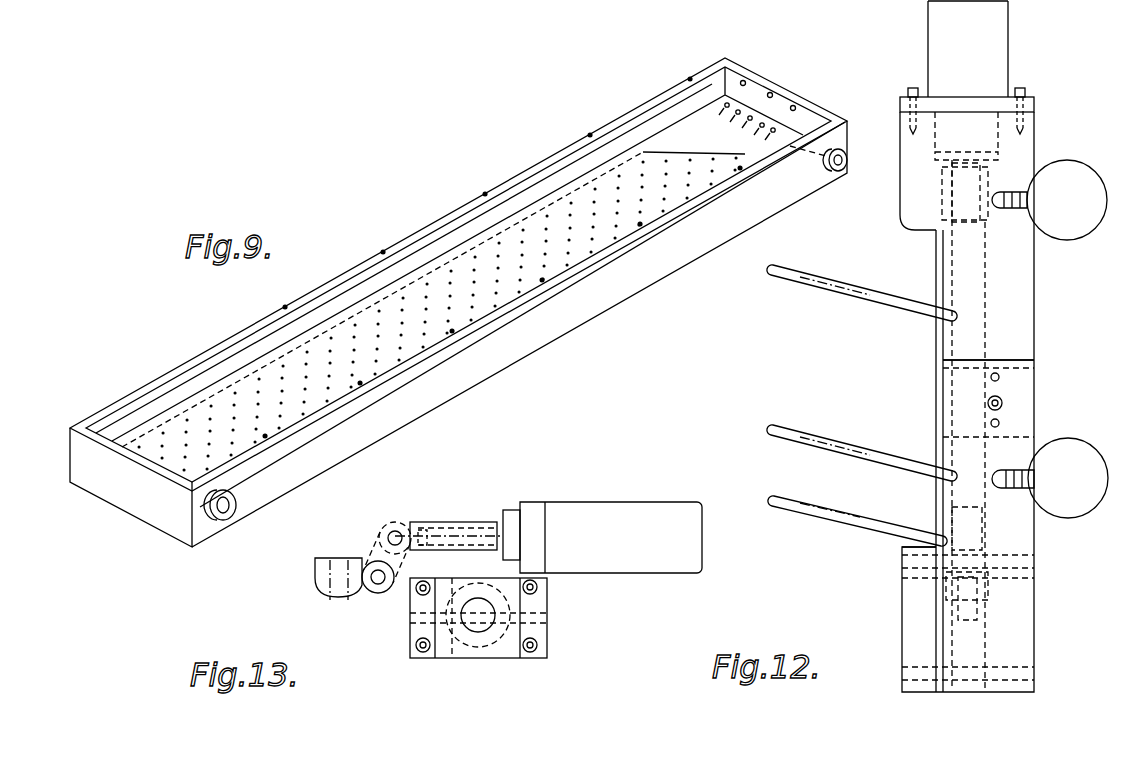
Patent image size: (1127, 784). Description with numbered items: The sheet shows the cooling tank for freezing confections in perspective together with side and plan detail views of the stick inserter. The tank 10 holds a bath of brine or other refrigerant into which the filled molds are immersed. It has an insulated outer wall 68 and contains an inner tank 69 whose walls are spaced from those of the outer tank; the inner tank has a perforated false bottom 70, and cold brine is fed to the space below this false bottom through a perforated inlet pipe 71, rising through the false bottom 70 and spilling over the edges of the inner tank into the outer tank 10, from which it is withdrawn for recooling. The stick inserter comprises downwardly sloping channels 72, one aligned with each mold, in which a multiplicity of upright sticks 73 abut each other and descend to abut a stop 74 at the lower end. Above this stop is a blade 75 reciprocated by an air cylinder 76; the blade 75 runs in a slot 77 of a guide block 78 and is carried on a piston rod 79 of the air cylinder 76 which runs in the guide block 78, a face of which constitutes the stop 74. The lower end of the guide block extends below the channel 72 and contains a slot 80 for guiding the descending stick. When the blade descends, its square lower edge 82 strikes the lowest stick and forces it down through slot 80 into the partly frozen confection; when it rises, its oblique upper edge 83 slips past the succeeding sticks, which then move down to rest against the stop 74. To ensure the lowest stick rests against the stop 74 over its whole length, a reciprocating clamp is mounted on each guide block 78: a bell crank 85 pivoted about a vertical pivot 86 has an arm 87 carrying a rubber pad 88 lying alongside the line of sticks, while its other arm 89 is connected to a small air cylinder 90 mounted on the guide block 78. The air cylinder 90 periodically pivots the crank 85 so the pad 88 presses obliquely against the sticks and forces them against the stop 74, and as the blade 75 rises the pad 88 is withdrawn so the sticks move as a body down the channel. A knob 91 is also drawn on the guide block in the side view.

In FIG. 9, the tank 10 is at (658, 258).
In FIG. 9, the insulated outer wall 68 is at (480, 197).
In FIG. 9, the inner tank 69 is at (612, 140).
In FIG. 9, the perforated false bottom 70 is at (675, 152).
In FIG. 9, the perforated inlet pipe 71 is at (770, 118).
In FIG. 12, the channel 72 is at (823, 516).
In FIG. 12, the stick 73 is at (933, 274).
In FIG. 12, the stop 74 is at (948, 364).
In FIG. 13, the stop 74 is at (447, 660).
In FIG. 12, the blade 75 is at (942, 192).
In FIG. 12, the air cylinder 76 is at (1010, 25).
In FIG. 13, the slot 77 is at (430, 632).
In FIG. 12, the guide block 78 is at (1036, 328).
In FIG. 13, the guide block 78 is at (525, 658).
In FIG. 12, the piston rod 79 is at (983, 522).
In FIG. 12, the slot 80 is at (937, 633).
In FIG. 12, the square lower edge 82 is at (937, 228).
In FIG. 12, the oblique upper edge 83 is at (945, 172).
In FIG. 13, the bell crank 85 is at (370, 556).
In FIG. 13, the vertical pivot 86 is at (382, 590).
In FIG. 13, the arm 87 is at (328, 594).
In FIG. 13, the rubber pad 88 is at (347, 598).
In FIG. 13, the arm 89 is at (397, 530).
In FIG. 13, the air cylinder 90 is at (589, 502).
In FIG. 12, the knob 91 is at (1087, 242).